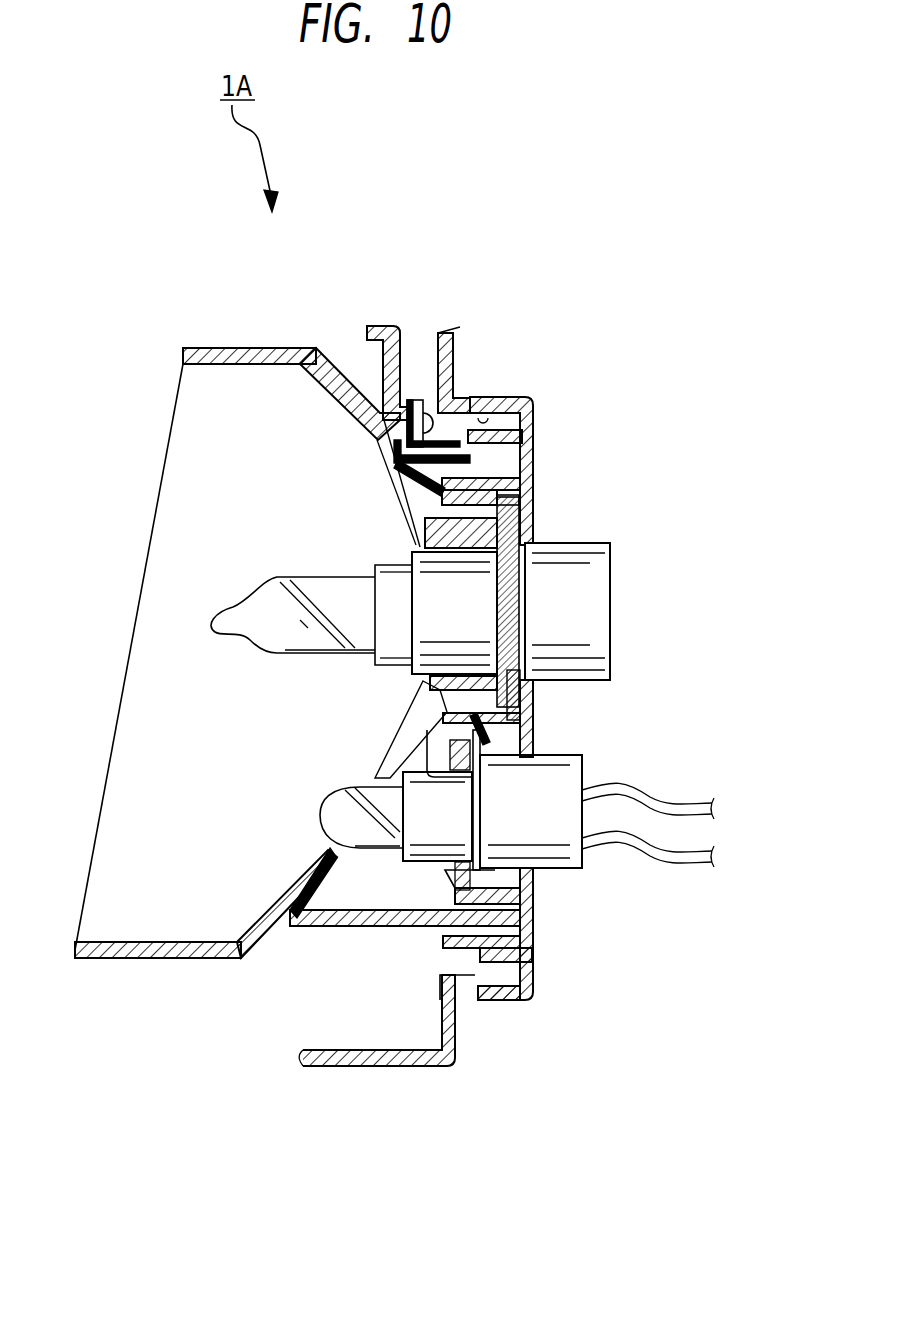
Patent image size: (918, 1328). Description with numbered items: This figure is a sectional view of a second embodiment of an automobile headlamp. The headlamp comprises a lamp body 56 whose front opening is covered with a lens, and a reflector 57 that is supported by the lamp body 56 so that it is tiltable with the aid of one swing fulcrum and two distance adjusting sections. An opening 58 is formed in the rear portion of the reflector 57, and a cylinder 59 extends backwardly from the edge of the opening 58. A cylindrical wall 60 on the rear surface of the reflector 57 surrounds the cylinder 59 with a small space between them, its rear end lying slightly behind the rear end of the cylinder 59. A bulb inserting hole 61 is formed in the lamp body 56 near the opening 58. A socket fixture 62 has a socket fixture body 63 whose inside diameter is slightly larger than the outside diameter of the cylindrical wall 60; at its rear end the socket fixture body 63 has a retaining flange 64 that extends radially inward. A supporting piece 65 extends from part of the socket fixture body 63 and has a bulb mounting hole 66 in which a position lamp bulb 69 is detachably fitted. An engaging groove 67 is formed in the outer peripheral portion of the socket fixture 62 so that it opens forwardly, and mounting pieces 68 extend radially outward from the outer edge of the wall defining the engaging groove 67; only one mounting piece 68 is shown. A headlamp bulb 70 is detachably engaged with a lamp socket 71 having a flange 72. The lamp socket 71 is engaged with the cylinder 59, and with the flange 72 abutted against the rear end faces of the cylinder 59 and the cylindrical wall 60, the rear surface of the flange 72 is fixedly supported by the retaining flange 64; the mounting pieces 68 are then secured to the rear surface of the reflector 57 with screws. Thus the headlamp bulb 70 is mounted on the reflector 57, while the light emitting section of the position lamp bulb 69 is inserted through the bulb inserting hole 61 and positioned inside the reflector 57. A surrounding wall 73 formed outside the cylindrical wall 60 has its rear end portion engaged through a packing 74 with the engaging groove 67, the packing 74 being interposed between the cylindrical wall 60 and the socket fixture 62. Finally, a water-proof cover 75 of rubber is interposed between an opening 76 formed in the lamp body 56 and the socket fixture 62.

The lamp body 56 is at (358, 1068).
The reflector 57 is at (213, 348).
The opening 58 is at (438, 548).
The cylinder 59 is at (430, 524).
The cylindrical wall 60 is at (460, 398).
The bulb inserting hole 61 is at (328, 854).
The socket fixture 62 is at (535, 510).
The socket fixture body 63 is at (522, 722).
The retaining flange 64 is at (535, 518).
The supporting piece 65 is at (355, 926).
The bulb mounting hole 66 is at (535, 787).
The engaging groove 67 is at (535, 456).
The mounting piece 68 is at (420, 398).
The position lamp bulb 69 is at (395, 792).
The headlamp bulb 70 is at (220, 612).
The lamp socket 71 is at (598, 573).
The flange 72 is at (535, 500).
The surrounding wall 73 is at (426, 926).
The packing 74 is at (535, 481).
The water-proof cover 75 is at (520, 400).
The opening 76 is at (492, 400).